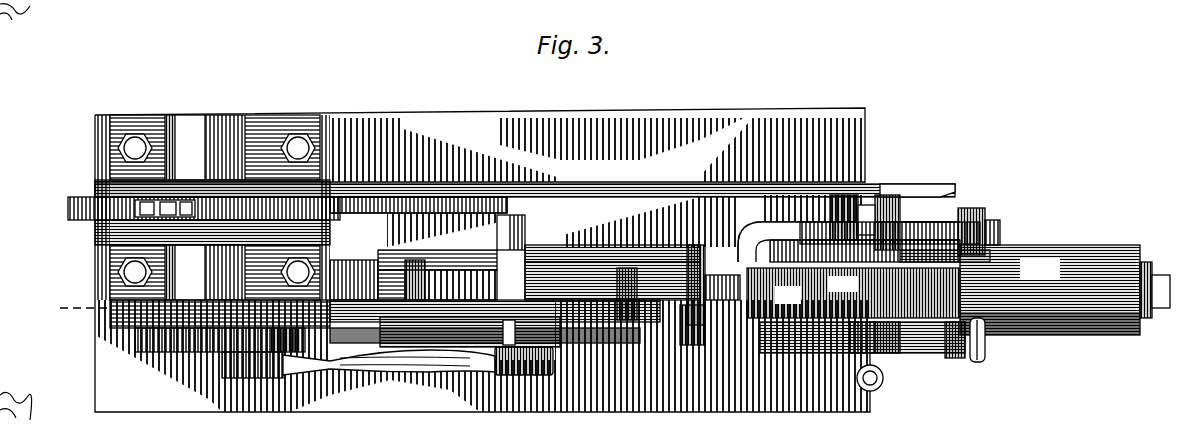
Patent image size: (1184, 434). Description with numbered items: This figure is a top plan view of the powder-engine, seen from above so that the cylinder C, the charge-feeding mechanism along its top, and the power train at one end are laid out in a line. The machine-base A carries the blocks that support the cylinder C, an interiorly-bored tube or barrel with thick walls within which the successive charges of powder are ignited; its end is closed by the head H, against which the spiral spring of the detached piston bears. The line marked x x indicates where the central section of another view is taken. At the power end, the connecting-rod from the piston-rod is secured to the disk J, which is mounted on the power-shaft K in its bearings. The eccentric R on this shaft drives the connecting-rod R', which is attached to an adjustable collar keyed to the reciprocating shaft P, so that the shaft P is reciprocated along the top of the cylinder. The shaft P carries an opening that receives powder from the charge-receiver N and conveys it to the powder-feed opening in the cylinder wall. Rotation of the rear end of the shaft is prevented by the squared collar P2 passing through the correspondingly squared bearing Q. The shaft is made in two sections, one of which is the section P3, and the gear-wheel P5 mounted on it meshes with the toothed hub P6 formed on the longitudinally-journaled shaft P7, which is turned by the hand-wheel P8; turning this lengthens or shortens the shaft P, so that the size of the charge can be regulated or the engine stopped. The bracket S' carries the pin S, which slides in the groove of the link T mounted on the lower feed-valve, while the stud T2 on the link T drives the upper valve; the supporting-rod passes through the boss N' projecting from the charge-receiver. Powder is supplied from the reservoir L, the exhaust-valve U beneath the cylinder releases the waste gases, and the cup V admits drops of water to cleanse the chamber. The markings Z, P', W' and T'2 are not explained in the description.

The machine-base A is at (482, 260).
The power-shaft K is at (160, 313).
The eccentric R is at (197, 222).
The disk J is at (185, 343).
The lever Z is at (376, 358).
The toothed hub P6 is at (692, 345).
The squared collar P2 is at (413, 279).
The bearing Q is at (413, 286).
The reciprocating shaft P is at (515, 304).
The spindle P' is at (515, 248).
The connecting-rod R' is at (418, 219).
The gear-wheel P5 is at (698, 248).
The shaft section P3 is at (722, 276).
The slide plate W' is at (525, 198).
The boss N' is at (917, 174).
The pin S is at (877, 232).
The link T is at (865, 231).
The exhaust-valve U is at (878, 234).
The bracket S' is at (890, 215).
The powder-feed reservoir L is at (853, 293).
The stud T2 is at (862, 314).
The shaft T'2 is at (945, 259).
The cylinder C is at (1050, 290).
The head H is at (1146, 263).
The axis line x is at (1172, 290).
The longitudinally-journaled shaft P7 is at (860, 322).
The charge-receiver N is at (869, 356).
The cup V is at (918, 388).
The hand-wheel P8 is at (980, 363).